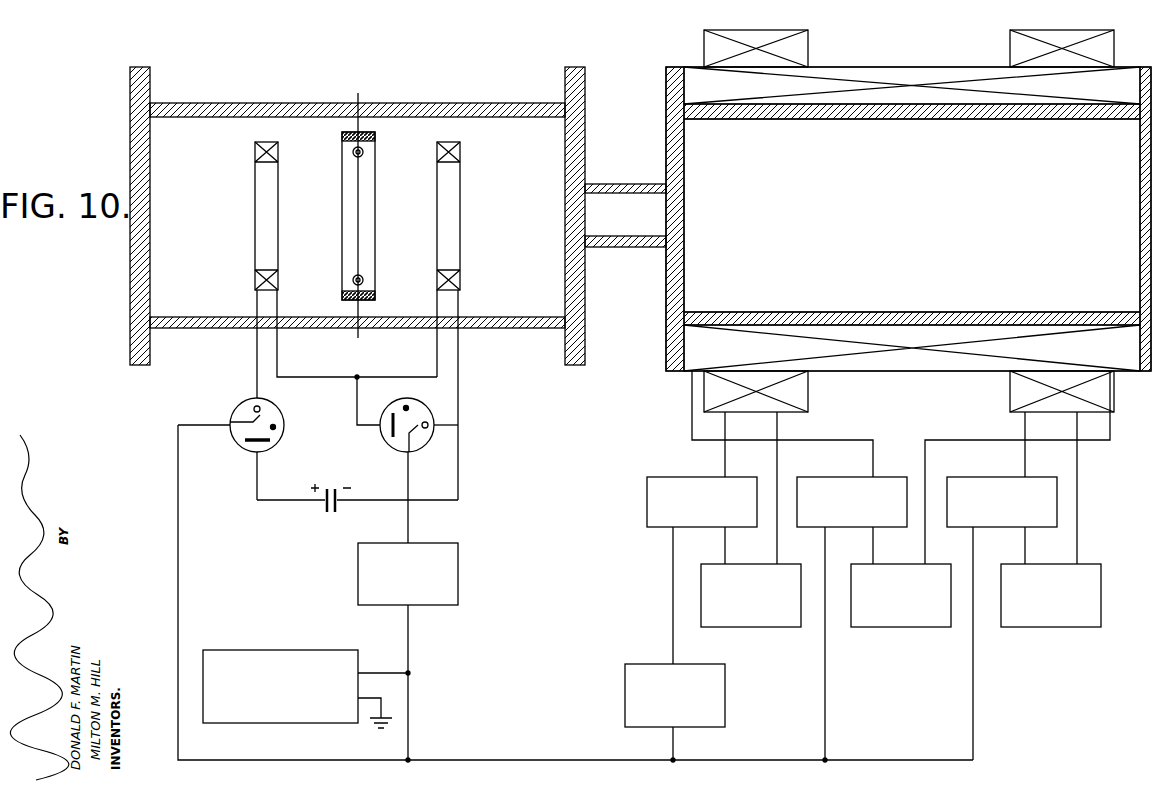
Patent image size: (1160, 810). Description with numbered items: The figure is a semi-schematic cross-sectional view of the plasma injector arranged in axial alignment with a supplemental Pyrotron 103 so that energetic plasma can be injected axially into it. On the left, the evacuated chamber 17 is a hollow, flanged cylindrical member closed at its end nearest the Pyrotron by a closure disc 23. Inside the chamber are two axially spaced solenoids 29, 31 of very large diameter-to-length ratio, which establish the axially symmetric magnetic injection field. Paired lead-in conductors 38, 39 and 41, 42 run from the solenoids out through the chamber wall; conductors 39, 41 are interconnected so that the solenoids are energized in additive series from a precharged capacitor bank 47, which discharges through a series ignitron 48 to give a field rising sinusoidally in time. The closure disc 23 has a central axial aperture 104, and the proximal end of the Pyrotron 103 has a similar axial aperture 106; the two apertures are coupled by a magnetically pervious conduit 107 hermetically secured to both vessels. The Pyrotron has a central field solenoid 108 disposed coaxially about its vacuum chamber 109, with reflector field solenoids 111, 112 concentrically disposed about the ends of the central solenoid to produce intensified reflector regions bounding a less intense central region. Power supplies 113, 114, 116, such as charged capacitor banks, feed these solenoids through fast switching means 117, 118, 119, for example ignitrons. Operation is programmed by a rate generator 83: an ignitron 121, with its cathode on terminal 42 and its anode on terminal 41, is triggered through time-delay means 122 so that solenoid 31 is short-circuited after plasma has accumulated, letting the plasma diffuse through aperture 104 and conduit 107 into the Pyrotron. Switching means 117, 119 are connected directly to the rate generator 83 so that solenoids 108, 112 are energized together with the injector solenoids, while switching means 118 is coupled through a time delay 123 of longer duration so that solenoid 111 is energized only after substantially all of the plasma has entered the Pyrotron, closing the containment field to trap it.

The chamber 17 is at (275, 77).
The closure disc 23 is at (568, 142).
The solenoid 29 is at (252, 217).
The solenoid 31 is at (463, 216).
The lead-in conductor 38 is at (252, 298).
The lead-in conductor 39 is at (279, 298).
The lead-in conductor 41 is at (436, 299).
The lead-in conductor 42 is at (460, 299).
The capacitor bank 47 is at (328, 515).
The series ignitron 48 is at (234, 444).
The rate generator 83 is at (275, 650).
The Pyrotron 103 is at (675, 44).
The central axial aperture 104 is at (586, 190).
The axial aperture 106 is at (660, 247).
The conduit 107 is at (640, 226).
The central field solenoid 108 is at (914, 375).
The vacuum chamber 109 is at (922, 195).
The reflector field solenoid 111 is at (808, 48).
The reflector field solenoid 112 is at (1010, 42).
The power supply 113 is at (906, 628).
The power supply 114 is at (756, 628).
The power supply 116 is at (1054, 628).
The switching means 117 is at (836, 476).
The switching means 118 is at (667, 476).
The switching means 119 is at (985, 476).
The ignitron 121 is at (386, 445).
The time-delay means 122 is at (460, 571).
The time delay 123 is at (625, 698).